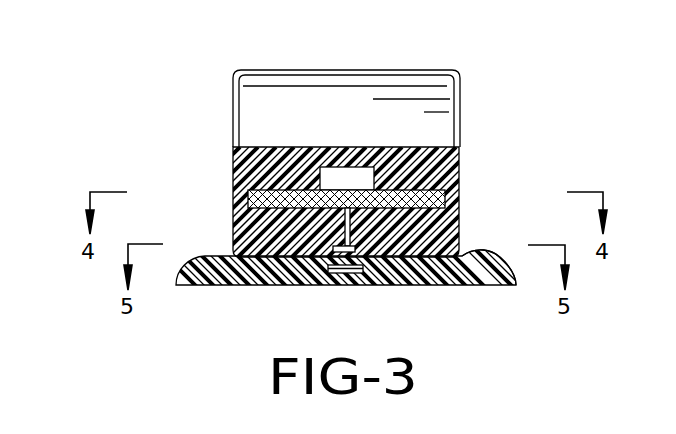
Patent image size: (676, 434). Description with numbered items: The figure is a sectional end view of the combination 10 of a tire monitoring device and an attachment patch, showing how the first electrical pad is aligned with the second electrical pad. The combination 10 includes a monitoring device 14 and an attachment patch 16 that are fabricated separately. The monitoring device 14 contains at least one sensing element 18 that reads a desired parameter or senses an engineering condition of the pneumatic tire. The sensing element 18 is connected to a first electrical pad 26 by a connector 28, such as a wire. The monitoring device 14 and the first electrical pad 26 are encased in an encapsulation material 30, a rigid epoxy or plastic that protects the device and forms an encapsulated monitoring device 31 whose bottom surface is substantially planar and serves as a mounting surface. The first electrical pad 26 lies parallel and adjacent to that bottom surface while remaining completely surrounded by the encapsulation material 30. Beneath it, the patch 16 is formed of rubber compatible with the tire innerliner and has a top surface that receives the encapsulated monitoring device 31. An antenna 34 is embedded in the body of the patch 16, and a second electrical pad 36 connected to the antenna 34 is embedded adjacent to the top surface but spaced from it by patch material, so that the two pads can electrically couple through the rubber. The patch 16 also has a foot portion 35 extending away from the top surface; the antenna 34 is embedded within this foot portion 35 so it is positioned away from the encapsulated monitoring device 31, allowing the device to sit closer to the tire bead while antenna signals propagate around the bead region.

The combination 10 is at (502, 74).
The encapsulated monitoring device 31 is at (470, 125).
The encapsulation material 30 is at (237, 163).
The sensing element 18 is at (344, 178).
The monitoring device 14 is at (458, 186).
The first electrical pad 26 is at (338, 247).
The connector 28 is at (354, 250).
The attachment patch 16 is at (243, 292).
The foot portion 35 is at (471, 248).
The second electrical pad 36 is at (330, 270).
The antenna 34 is at (348, 274).